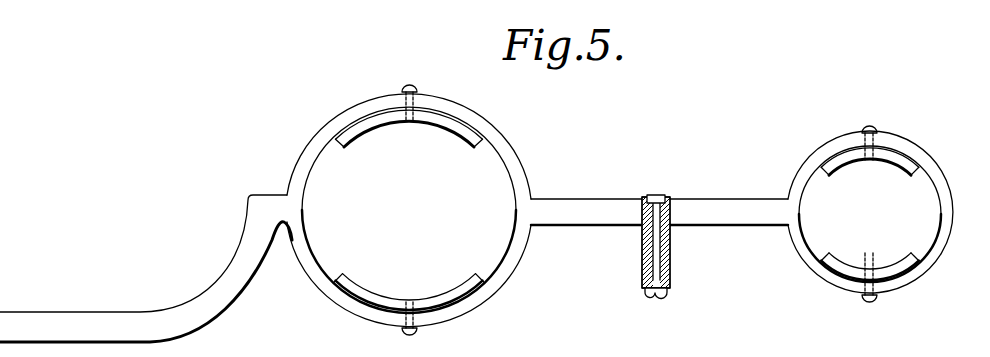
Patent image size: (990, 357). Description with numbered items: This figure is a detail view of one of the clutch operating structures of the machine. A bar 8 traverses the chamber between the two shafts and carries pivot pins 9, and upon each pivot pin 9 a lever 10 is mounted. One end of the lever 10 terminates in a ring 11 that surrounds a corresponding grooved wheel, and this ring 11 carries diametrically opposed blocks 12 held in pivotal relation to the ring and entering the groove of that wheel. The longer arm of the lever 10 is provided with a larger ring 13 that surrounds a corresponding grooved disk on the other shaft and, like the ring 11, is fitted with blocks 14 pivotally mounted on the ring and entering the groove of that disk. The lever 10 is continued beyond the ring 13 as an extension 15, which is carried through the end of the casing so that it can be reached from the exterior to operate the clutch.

The bar 8 is at (671, 263).
The pivot pin 9 is at (664, 293).
The lever 10 is at (594, 205).
The ring 11 is at (820, 152).
The blocks 12 is at (850, 165).
The ring 13 is at (326, 125).
The blocks 14 is at (360, 138).
The extension 15 is at (130, 318).